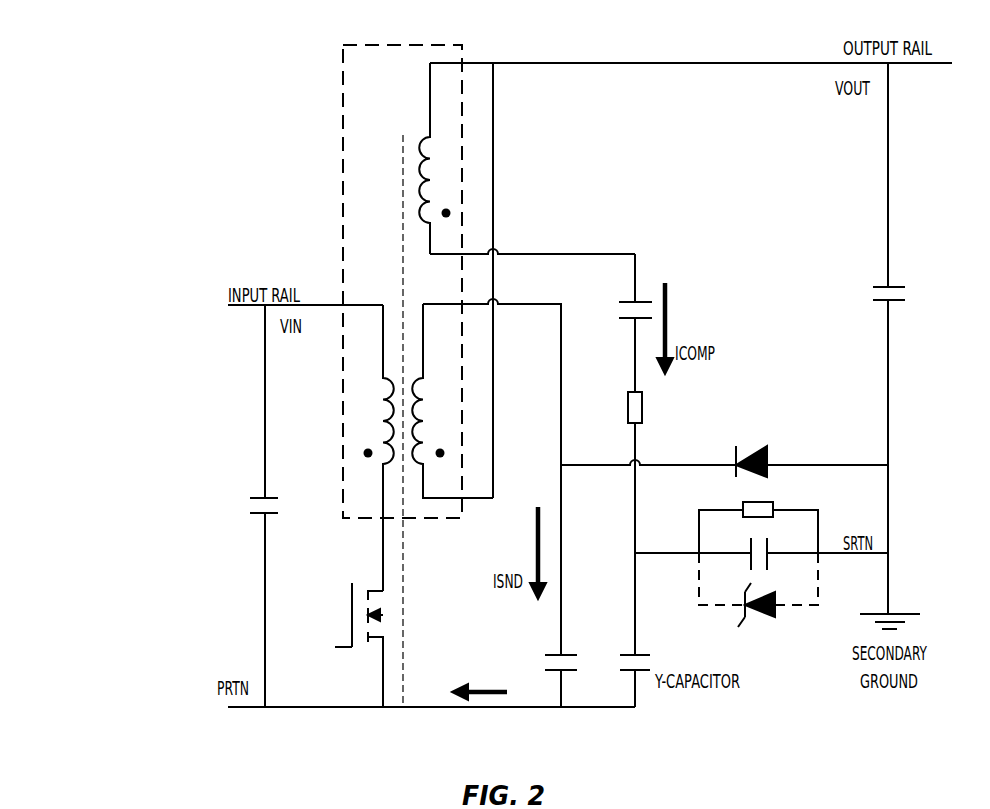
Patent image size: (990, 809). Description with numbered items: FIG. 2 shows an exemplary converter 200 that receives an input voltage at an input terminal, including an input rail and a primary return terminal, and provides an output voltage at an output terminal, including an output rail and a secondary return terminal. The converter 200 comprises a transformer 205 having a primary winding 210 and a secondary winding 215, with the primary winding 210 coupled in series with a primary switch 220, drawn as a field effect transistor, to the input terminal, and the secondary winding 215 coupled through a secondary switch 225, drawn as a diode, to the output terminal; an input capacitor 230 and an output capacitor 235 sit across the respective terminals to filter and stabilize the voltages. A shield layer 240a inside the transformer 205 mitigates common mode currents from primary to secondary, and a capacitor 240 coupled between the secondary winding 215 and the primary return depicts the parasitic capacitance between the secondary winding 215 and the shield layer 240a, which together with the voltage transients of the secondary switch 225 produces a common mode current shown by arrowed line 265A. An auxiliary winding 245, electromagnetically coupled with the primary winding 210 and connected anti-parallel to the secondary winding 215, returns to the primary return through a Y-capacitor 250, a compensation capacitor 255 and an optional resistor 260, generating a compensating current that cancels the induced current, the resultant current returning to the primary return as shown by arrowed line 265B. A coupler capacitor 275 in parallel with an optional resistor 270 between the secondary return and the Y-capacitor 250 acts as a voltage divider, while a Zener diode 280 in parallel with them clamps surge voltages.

The converter 200 is at (143, 70).
The transformer 205 is at (338, 138).
The primary winding 210 is at (373, 448).
The secondary winding 215 is at (452, 401).
The primary switch 220 is at (368, 590).
The secondary switch 225 is at (757, 453).
The input capacitor 230 is at (255, 497).
The output capacitor 235 is at (880, 283).
The capacitor 240 is at (556, 652).
The shield layer 240a is at (407, 608).
The auxiliary winding 245 is at (437, 158).
The Y-capacitor 250 is at (630, 652).
The compensation capacitor 255 is at (629, 302).
The optional resistor 260 is at (628, 410).
The arrowed line 265A is at (537, 565).
The arrowed line 265B is at (472, 688).
The optional resistor 270 is at (745, 500).
The coupler capacitor 275 is at (747, 558).
The Zener diode 280 is at (780, 620).